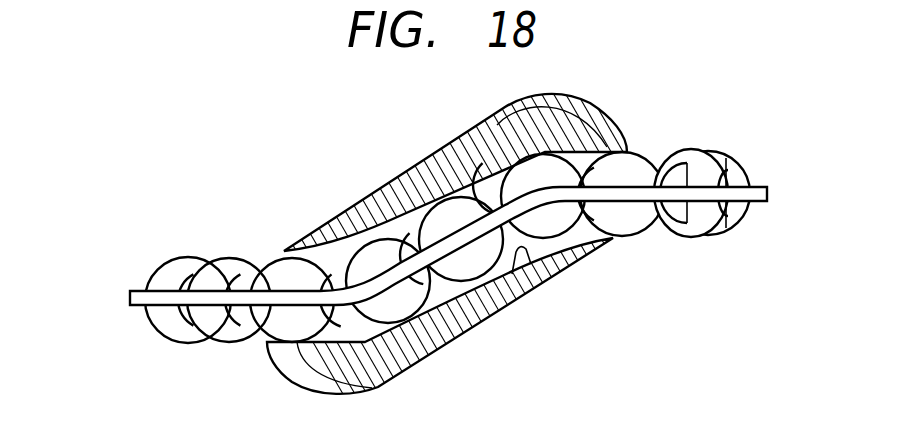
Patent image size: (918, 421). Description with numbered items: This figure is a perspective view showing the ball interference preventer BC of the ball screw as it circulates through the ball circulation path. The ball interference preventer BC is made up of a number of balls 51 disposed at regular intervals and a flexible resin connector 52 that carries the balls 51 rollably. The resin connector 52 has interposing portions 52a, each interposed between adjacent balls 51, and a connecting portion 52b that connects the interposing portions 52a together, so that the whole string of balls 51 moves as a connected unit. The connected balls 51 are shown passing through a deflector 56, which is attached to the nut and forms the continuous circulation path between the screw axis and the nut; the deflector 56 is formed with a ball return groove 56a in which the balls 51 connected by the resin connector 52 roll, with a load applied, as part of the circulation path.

The ball 51 is at (187, 342).
The resin connector 52 is at (160, 312).
The interposing portion 52a is at (245, 277).
The connecting portion 52b is at (203, 298).
The deflector 56 is at (462, 342).
The ball return groove 56a is at (527, 268).
The ball interference preventer BC is at (748, 162).